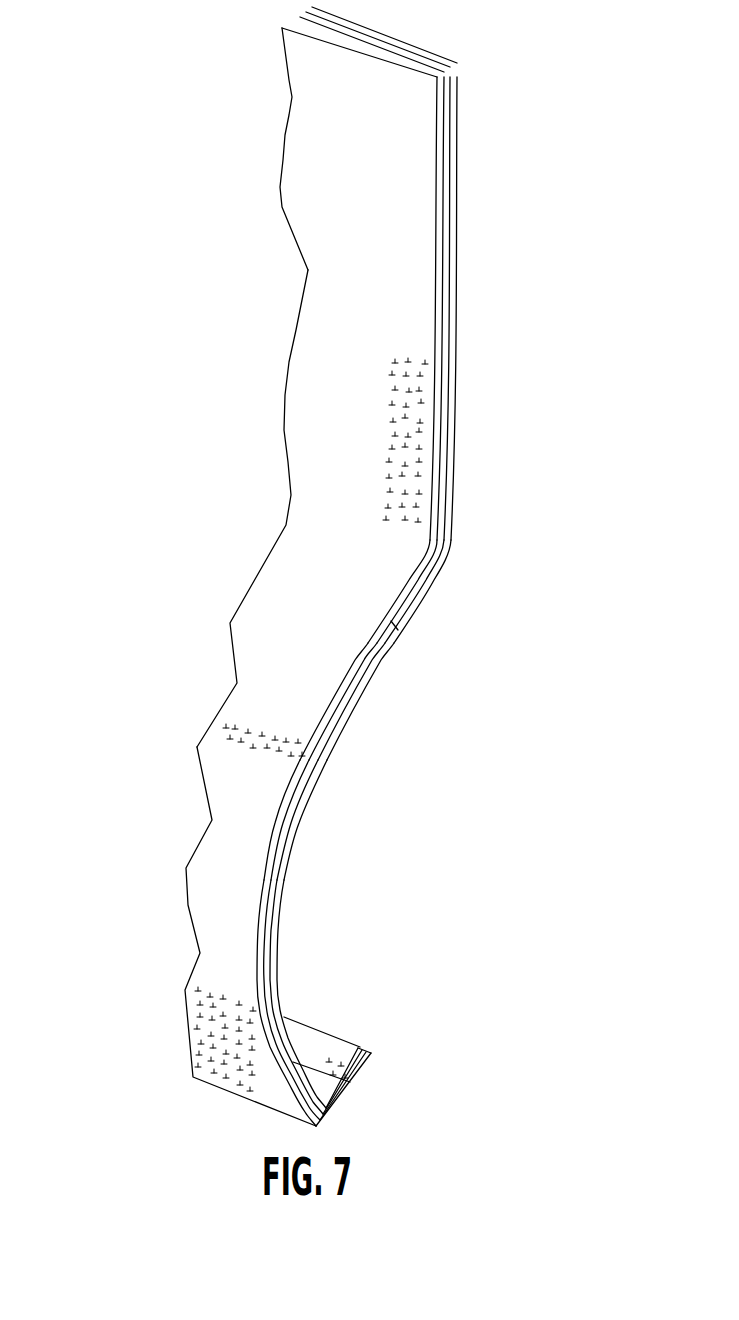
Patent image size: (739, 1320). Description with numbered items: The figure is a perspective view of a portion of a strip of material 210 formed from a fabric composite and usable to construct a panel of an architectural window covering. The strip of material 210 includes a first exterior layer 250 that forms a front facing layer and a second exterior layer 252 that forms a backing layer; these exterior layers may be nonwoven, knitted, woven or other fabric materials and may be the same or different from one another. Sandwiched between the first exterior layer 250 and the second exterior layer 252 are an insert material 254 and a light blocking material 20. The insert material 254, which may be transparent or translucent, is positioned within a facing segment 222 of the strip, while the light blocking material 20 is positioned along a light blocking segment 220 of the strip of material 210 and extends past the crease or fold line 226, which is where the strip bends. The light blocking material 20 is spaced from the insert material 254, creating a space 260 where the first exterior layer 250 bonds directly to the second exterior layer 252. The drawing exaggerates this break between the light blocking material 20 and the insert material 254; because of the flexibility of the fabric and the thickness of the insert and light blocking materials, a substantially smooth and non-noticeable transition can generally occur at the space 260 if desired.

The strip of material 210 is at (321, 566).
The light blocking segment 220 is at (410, 177).
The light blocking material 20 is at (450, 312).
The crease or fold line 226 is at (432, 553).
The space 260 is at (397, 627).
The second exterior layer 252 is at (327, 753).
The insert material 254 is at (295, 820).
The first exterior layer 250 is at (257, 665).
The facing segment 222 is at (203, 867).